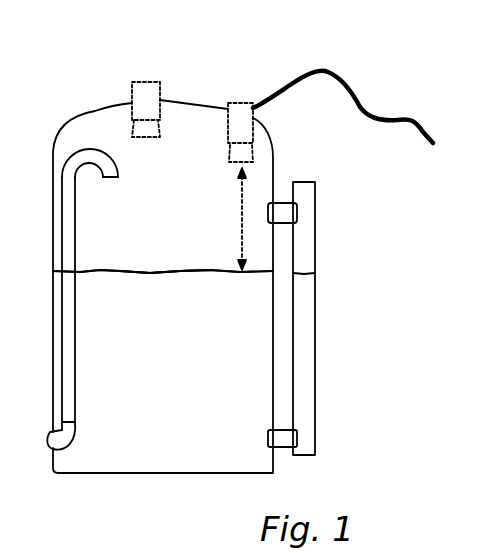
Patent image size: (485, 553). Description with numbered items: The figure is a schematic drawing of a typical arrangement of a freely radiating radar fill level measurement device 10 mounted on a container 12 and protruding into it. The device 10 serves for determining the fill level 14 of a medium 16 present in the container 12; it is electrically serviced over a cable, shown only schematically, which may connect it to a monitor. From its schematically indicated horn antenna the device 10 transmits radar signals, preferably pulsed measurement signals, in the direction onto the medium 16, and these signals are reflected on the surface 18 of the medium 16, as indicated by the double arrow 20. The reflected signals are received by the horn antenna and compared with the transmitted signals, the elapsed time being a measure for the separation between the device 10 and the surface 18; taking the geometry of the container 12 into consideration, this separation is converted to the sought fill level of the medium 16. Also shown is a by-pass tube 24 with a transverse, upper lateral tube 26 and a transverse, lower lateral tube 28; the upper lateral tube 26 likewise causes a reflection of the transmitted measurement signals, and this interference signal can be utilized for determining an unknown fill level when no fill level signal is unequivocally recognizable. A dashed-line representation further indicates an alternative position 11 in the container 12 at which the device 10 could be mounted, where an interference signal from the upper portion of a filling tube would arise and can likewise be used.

The radar fill level measurement device 10 is at (240, 107).
The position 11 is at (148, 82).
The container 12 is at (82, 116).
The fill level 14 is at (116, 270).
The medium 16 is at (153, 394).
The surface 18 is at (159, 274).
The double arrow 20 is at (242, 197).
The by-pass tube 24 is at (309, 349).
The upper lateral tube 26 is at (283, 219).
The lower lateral tube 28 is at (285, 436).